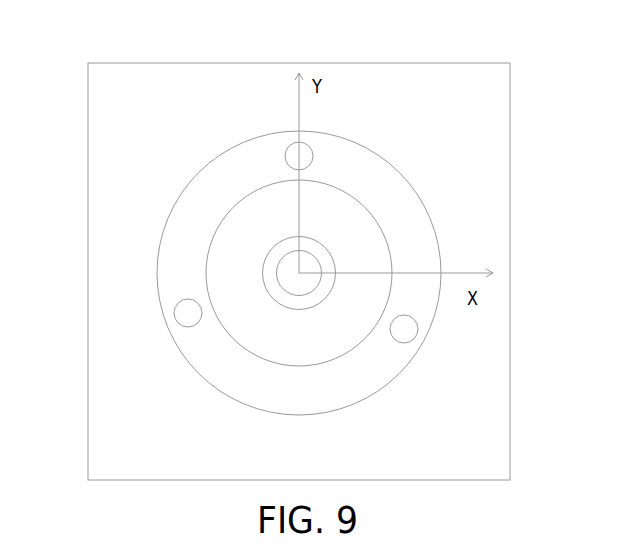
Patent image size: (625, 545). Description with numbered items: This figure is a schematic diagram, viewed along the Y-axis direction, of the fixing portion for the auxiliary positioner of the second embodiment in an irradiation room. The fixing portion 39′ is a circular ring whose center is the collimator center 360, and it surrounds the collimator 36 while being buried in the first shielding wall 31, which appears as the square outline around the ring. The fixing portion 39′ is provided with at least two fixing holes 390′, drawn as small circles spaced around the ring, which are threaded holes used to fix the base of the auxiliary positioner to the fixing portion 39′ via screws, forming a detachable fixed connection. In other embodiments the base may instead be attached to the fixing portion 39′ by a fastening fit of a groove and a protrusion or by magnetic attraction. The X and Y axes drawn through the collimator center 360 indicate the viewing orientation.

The first shielding wall 31 is at (368, 128).
The fixing portion 39′ is at (200, 200).
The fixing holes 390′ is at (190, 313).
The collimator 36 is at (263, 263).
The collimator center 360 is at (299, 273).